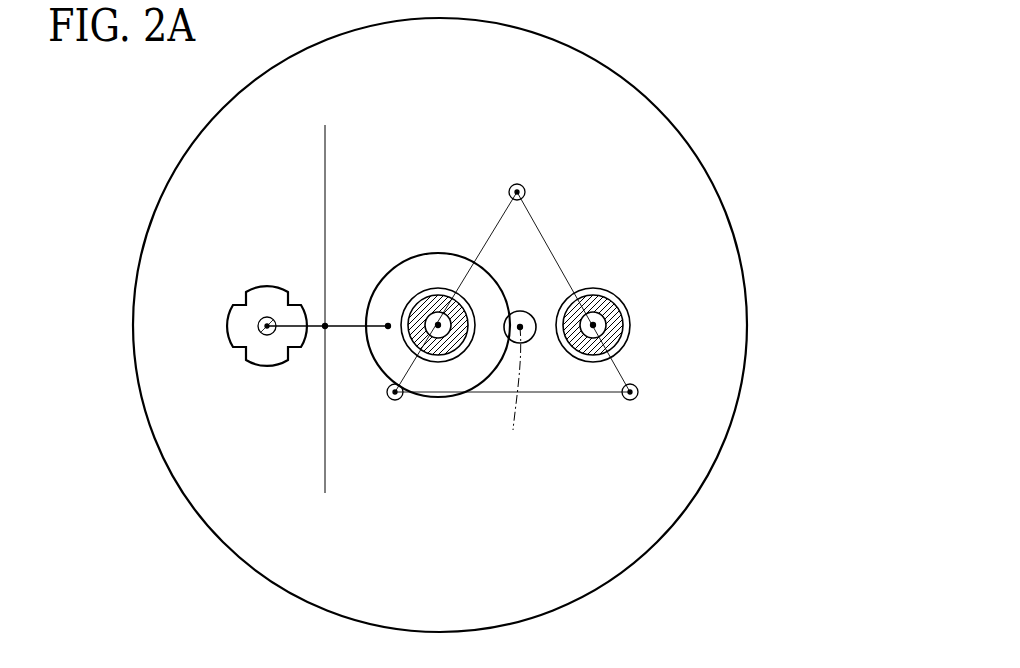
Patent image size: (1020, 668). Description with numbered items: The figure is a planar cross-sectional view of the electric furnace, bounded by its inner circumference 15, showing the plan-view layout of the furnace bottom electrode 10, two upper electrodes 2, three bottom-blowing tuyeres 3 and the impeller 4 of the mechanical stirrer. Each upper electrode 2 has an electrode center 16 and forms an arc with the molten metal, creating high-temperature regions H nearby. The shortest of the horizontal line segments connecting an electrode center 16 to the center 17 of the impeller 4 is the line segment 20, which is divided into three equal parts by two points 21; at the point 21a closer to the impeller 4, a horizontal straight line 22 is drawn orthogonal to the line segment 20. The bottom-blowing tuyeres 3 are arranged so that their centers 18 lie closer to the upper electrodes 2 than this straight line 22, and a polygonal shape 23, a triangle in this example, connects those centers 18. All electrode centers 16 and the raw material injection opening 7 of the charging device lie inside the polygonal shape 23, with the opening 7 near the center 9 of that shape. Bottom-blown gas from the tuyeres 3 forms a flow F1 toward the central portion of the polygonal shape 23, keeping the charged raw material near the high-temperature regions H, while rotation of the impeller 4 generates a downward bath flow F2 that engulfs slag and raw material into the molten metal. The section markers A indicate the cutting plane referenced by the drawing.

The inner circumference 15 is at (672, 122).
The straight line 22 is at (327, 160).
The line segment 20 is at (344, 325).
The point 21 is at (286, 322).
The point closer to the impeller 21a is at (325, 324).
The center of impeller 17 is at (258, 322).
The impeller 4 is at (266, 364).
The bath flow F2 is at (297, 268).
The furnace bottom electrode 10 is at (441, 252).
The upper electrode 2 is at (430, 296).
The electrode center 16 is at (452, 316).
The bottom-blowing tuyere 3 is at (517, 183).
The polygonal shape 23 is at (568, 394).
The center of tuyere 18 is at (525, 190).
The flow of bottom-blown gas F1 is at (517, 236).
The high-temperature region H is at (628, 306).
The raw material injection opening 7 is at (524, 342).
The center of polygonal shape 9 is at (513, 398).
The section line A is at (120, 398).